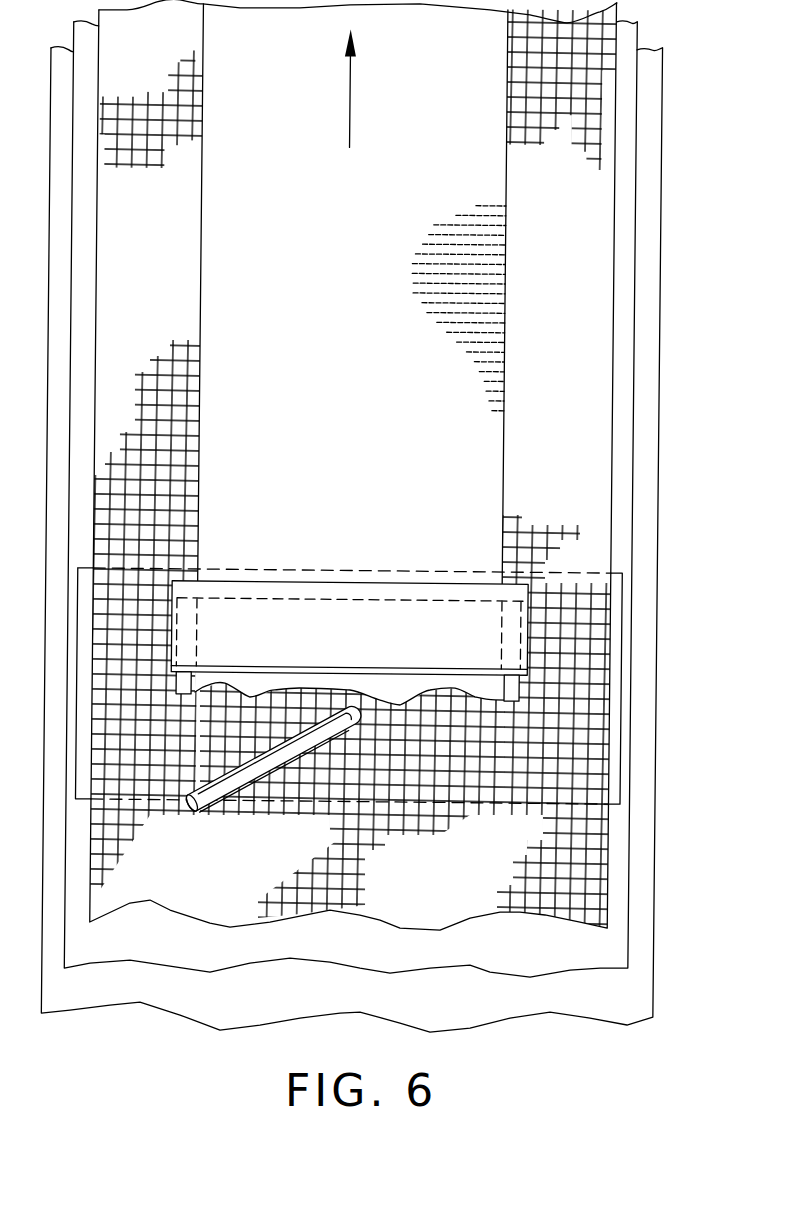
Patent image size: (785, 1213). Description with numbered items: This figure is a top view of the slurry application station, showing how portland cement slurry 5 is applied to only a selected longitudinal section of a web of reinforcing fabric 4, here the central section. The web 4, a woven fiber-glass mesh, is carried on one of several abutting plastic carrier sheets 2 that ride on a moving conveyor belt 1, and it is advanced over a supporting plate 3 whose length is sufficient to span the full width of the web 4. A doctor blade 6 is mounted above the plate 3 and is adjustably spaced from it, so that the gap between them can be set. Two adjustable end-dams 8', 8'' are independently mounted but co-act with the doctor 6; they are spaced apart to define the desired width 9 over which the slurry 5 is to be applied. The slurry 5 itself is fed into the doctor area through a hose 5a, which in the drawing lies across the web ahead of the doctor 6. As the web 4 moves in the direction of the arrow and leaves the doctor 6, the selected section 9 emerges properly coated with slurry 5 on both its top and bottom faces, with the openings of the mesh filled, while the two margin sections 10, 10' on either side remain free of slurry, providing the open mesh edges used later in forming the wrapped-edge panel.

The conveyor belt 1 is at (176, 997).
The carrier sheet 2 is at (344, 946).
The supporting plate 3 is at (75, 623).
The web of reinforcing fabric 4 is at (238, 927).
The slurry 5 is at (286, 684).
The hose 5a is at (230, 782).
The doctor blade 6 is at (370, 605).
The adjustable end-dam 8' is at (212, 663).
The adjustable end-dam 8'' is at (487, 667).
The selected section 9 is at (340, 436).
The margin section 10 is at (309, 447).
The margin section 10' is at (609, 469).